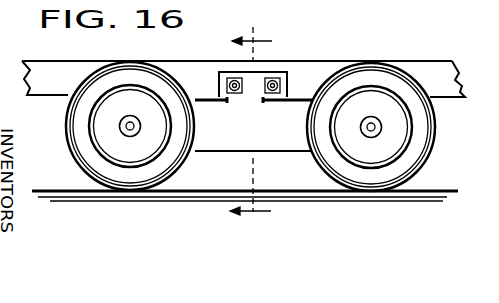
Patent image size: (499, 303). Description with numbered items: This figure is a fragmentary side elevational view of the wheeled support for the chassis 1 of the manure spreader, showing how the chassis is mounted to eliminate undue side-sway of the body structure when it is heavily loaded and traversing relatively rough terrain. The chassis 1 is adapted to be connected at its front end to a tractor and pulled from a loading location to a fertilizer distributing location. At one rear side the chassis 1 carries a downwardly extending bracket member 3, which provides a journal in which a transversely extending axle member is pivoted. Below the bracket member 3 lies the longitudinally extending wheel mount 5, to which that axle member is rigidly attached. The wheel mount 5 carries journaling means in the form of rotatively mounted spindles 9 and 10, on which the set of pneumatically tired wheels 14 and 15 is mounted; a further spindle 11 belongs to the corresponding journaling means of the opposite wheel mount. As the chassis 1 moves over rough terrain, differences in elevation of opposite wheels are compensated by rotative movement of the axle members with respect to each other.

The chassis 1 is at (451, 16).
The bracket member 3 is at (263, 80).
The wheel mount 5 is at (279, 143).
The spindle 9 is at (122, 131).
The spindle 10 is at (375, 128).
The spindle 11 is at (251, 121).
The pneumatically tired wheel 14 is at (125, 178).
The pneumatically tired wheel 15 is at (404, 173).